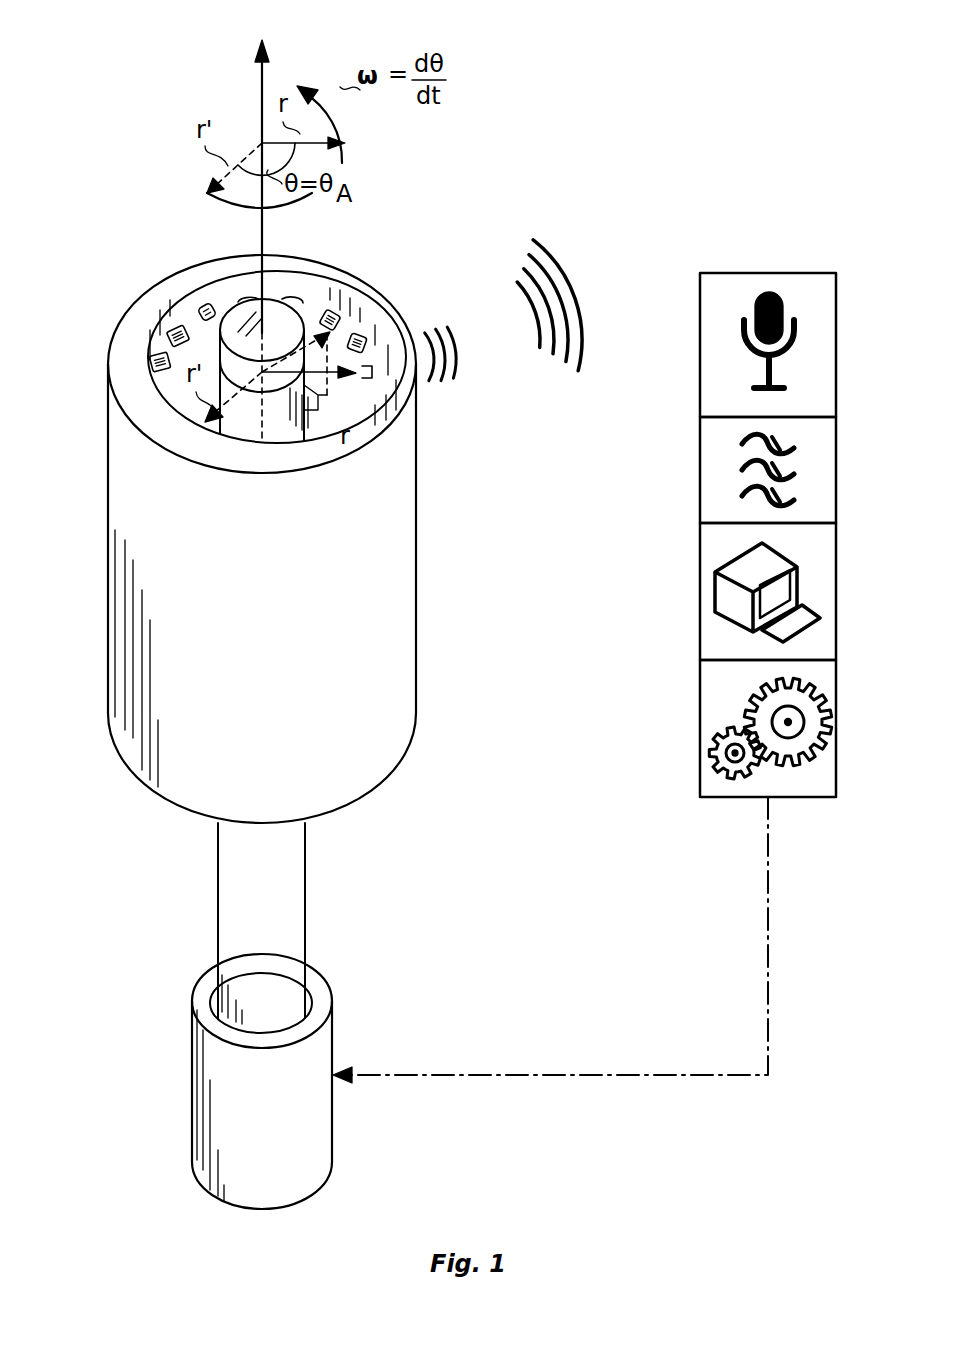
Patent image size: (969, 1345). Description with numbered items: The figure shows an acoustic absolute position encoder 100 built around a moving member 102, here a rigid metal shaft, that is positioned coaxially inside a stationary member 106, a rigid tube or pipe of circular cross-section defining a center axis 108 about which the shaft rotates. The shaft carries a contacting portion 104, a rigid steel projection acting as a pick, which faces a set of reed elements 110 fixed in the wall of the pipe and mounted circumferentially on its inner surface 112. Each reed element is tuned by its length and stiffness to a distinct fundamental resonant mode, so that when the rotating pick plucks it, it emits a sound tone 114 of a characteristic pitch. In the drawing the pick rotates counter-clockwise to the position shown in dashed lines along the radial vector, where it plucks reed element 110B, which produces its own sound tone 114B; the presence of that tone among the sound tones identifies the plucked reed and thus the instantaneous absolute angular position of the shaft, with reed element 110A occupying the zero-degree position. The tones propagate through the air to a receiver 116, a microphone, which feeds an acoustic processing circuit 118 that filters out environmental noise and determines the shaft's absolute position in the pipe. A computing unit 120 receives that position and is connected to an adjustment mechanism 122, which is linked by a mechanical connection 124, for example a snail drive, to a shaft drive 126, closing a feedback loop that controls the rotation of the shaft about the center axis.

The acoustic absolute position encoder 100 is at (576, 78).
The moving member 102 is at (275, 305).
The contacting portion 104 is at (303, 422).
The stationary member 106 is at (416, 670).
The center axis 108 is at (262, 90).
The reed elements 110 is at (194, 306).
The reed element 110A is at (364, 340).
The reed element 110B is at (378, 378).
The inner surface 112 is at (350, 318).
The sound tones 114 is at (554, 266).
The sound tone 114B is at (453, 378).
The receiver 116 is at (700, 300).
The acoustic processing circuit 118 is at (700, 464).
The computing unit 120 is at (700, 588).
The adjustment mechanism 122 is at (700, 724).
The mechanical connection 124 is at (538, 1074).
The shaft drive 126 is at (194, 1036).